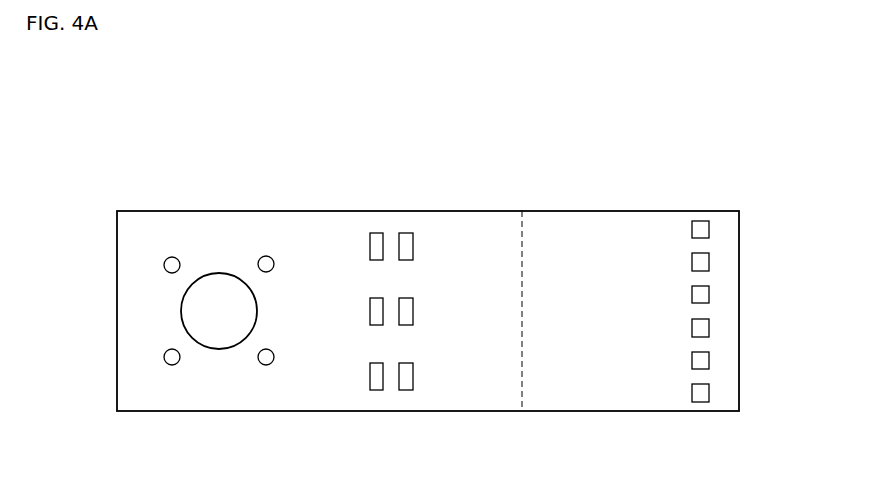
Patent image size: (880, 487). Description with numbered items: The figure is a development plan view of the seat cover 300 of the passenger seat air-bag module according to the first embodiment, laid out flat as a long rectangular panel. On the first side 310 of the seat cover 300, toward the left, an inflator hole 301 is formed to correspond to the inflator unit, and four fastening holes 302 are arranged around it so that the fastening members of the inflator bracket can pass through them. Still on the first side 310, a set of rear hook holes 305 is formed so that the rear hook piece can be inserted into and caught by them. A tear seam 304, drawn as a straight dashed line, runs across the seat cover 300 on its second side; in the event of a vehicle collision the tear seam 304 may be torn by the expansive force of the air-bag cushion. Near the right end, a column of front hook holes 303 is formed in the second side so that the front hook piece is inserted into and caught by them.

The seat cover 300 is at (483, 196).
The inflator hole 301 is at (187, 310).
The fastening holes 302 is at (170, 362).
The front hook holes 303 is at (708, 263).
The tear seam 304 is at (522, 277).
The rear hook holes 305 is at (406, 390).
The first side 310 is at (360, 233).